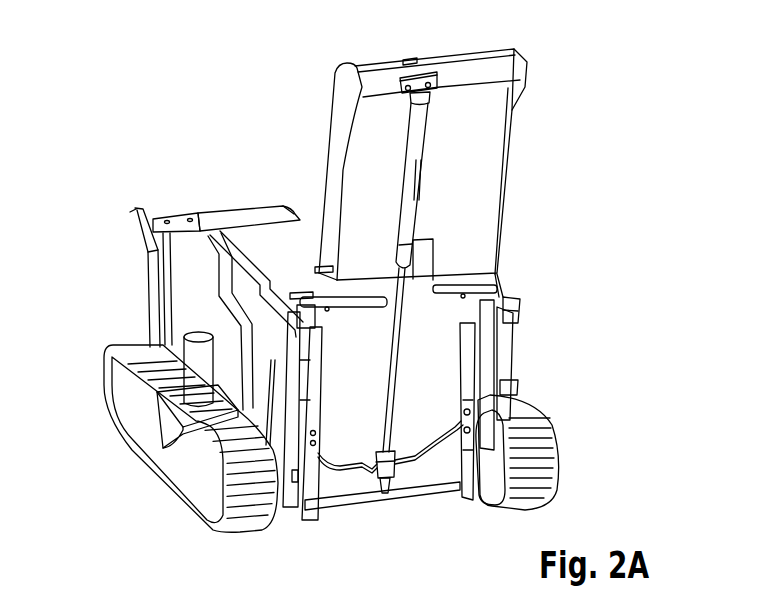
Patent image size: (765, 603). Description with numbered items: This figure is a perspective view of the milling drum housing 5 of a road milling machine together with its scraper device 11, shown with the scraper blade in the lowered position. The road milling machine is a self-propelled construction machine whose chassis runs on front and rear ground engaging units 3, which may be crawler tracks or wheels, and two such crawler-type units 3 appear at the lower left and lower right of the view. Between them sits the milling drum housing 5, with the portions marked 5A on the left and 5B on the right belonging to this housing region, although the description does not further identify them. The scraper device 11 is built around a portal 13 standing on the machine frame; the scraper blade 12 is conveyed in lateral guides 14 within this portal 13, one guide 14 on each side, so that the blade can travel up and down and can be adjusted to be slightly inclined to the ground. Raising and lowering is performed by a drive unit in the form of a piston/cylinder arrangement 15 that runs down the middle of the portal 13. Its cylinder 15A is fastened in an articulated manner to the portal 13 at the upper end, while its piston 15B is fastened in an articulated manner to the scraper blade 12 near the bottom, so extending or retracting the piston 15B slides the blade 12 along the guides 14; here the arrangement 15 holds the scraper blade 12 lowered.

The ground engaging units 3 is at (117, 392).
The milling drum housing 5 is at (170, 192).
The seat frame left portion 5A is at (207, 285).
The seat frame right bracket 5B is at (503, 300).
The scraper device 11 is at (540, 112).
The scraper blade 12 is at (343, 437).
The portal 13 is at (482, 66).
The lateral guides 14 is at (305, 312).
The piston/cylinder arrangement 15 is at (420, 187).
The cylinder 15A is at (413, 160).
The piston 15B is at (390, 425).